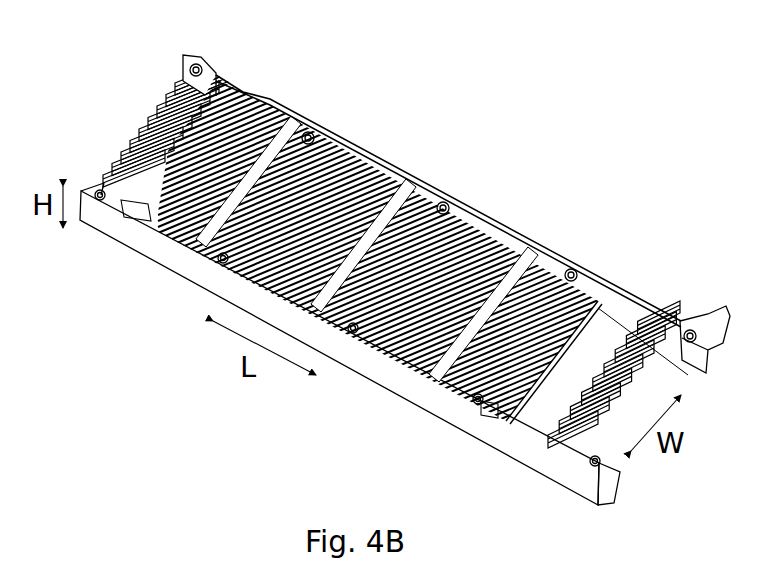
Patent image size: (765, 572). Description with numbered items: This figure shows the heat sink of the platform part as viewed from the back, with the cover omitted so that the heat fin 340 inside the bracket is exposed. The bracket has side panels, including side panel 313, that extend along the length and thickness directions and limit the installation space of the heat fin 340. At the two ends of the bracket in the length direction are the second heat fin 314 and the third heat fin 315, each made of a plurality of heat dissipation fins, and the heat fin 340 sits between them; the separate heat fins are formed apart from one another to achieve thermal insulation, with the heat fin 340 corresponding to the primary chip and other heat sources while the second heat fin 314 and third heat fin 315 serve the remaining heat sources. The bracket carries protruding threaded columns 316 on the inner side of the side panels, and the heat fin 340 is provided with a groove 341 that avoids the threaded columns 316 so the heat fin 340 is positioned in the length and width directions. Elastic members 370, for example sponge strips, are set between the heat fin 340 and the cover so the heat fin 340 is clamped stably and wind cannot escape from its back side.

The side panel 313 is at (398, 380).
The second heat fin 314 is at (187, 107).
The third heat fin 315 is at (672, 313).
The threaded column 316 is at (448, 190).
The heat fin 340 is at (372, 150).
The groove 341 is at (473, 403).
The elastic member 370 is at (187, 230).